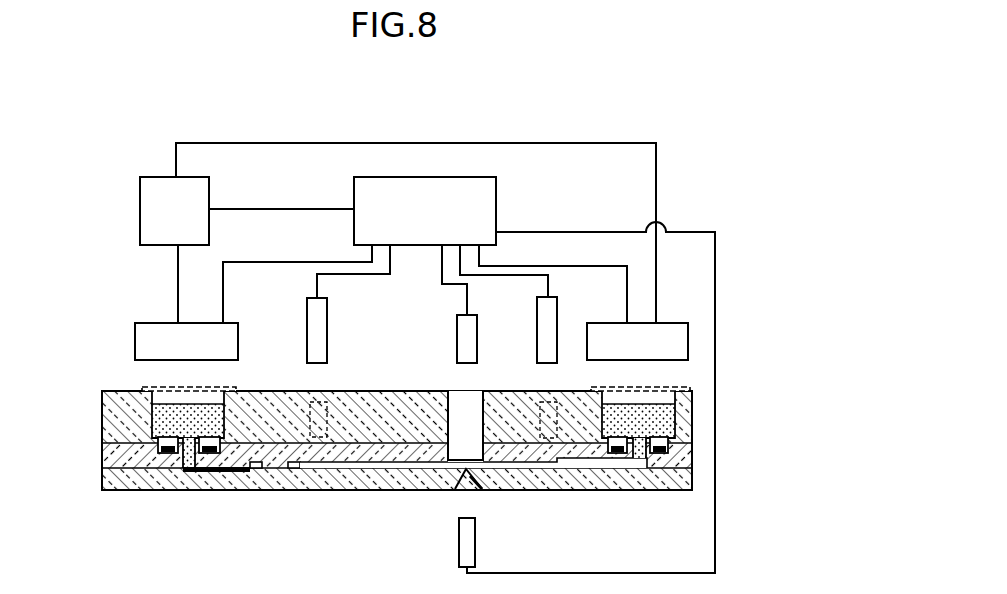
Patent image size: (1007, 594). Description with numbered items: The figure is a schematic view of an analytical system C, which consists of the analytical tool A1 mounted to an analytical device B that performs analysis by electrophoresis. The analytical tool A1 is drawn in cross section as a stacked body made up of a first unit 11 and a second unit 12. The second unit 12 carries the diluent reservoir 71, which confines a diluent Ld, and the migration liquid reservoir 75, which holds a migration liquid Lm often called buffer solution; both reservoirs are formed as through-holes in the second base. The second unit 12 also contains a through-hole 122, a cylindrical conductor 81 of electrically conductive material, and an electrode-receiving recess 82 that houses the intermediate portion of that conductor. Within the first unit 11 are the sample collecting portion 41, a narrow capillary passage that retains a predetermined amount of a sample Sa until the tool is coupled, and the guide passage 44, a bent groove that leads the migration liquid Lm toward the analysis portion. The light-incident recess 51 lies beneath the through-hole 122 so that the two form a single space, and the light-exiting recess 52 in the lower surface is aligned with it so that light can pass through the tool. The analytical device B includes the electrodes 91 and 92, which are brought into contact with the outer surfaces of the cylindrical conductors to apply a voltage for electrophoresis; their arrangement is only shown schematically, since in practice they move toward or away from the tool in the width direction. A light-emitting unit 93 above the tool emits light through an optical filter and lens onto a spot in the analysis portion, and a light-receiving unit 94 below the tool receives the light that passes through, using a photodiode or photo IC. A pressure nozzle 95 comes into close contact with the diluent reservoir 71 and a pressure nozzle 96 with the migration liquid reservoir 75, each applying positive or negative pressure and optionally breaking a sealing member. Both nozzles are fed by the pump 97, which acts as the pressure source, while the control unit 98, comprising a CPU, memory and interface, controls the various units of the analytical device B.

The pump 97 is at (140, 181).
The control unit 98 is at (497, 184).
The pressure nozzle 95 is at (139, 323).
The electrode 91 is at (306, 307).
The light-emitting unit 93 is at (457, 327).
The electrode 92 is at (557, 303).
The pressure nozzle 96 is at (685, 322).
The light-receiving unit 94 is at (459, 533).
The analytical tool A1 is at (97, 386).
The analytical system C is at (113, 96).
The analytical device B is at (511, 129).
The second unit 12 is at (102, 424).
The first unit 11 is at (103, 463).
The guide passage 44 is at (362, 470).
The through-hole 122 is at (452, 391).
The light-incident recess 51 is at (476, 460).
The light-exiting recess 52 is at (479, 491).
The diluent reservoir 71 is at (157, 451).
The migration liquid reservoir 75 is at (598, 424).
The sample collecting portion 41 is at (212, 473).
The cylindrical conductor 81 is at (318, 437).
The electrode-receiving recess 82 is at (548, 438).
The diluent Ld is at (178, 422).
The migration liquid Lm is at (652, 423).
The sample Sa is at (247, 473).